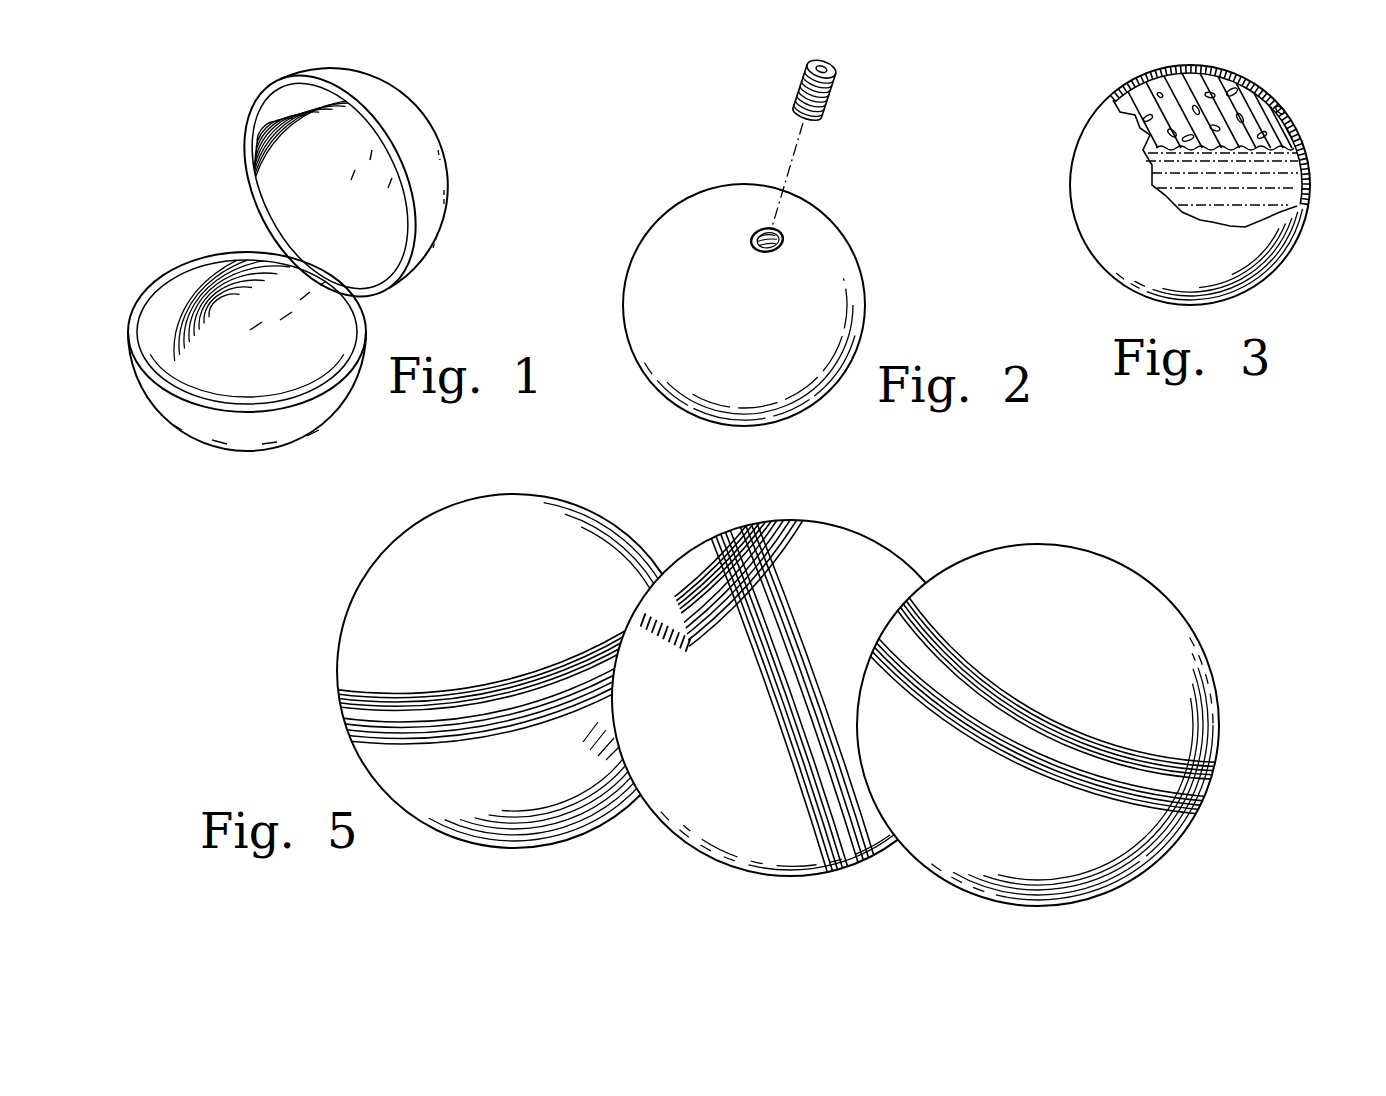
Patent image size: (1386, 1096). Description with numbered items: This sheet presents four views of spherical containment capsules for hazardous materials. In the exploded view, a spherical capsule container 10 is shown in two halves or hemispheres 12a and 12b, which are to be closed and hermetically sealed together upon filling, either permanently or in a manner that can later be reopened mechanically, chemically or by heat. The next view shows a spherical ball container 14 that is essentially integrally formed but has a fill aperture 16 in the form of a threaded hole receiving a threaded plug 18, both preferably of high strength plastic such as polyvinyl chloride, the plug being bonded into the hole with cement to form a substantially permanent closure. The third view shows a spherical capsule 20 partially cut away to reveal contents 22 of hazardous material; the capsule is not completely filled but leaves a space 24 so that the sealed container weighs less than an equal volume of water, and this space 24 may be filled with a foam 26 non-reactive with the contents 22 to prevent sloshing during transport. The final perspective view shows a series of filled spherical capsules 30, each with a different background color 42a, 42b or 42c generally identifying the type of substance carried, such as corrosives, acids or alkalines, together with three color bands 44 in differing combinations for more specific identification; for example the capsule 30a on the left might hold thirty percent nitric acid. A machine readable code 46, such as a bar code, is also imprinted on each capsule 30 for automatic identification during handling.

In FIG. 1, the spherical capsule container 10 is at (320, 262).
In FIG. 1, the hemisphere 12a is at (442, 146).
In FIG. 1, the hemisphere 12b is at (190, 437).
In FIG. 2, the spherical ball container 14 is at (668, 185).
In FIG. 2, the fill aperture 16 is at (783, 240).
In FIG. 2, the threaded plug 18 is at (832, 96).
In FIG. 3, the spherical capsule 20 is at (1048, 168).
In FIG. 3, the contents 22 is at (1308, 188).
In FIG. 3, the space 24 is at (1157, 95).
In FIG. 3, the foam 26 is at (1242, 110).
In FIG. 5, the filled spherical capsule 30 is at (753, 683).
In FIG. 5, the capsule 30a is at (350, 603).
In FIG. 5, the background color 42a is at (512, 828).
In FIG. 5, the background color 42b is at (785, 862).
In FIG. 5, the background color 42c is at (1133, 853).
In FIG. 5, the color bands 44 is at (333, 713).
In FIG. 5, the machine readable code 46 is at (683, 652).